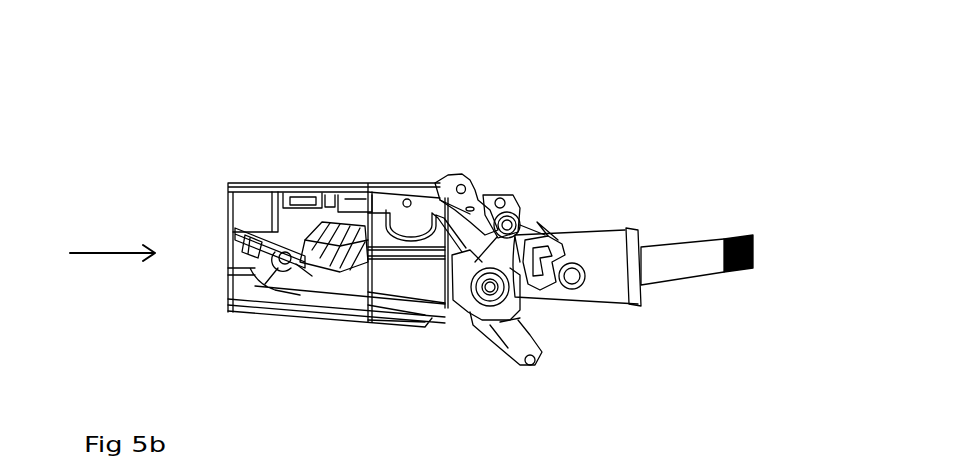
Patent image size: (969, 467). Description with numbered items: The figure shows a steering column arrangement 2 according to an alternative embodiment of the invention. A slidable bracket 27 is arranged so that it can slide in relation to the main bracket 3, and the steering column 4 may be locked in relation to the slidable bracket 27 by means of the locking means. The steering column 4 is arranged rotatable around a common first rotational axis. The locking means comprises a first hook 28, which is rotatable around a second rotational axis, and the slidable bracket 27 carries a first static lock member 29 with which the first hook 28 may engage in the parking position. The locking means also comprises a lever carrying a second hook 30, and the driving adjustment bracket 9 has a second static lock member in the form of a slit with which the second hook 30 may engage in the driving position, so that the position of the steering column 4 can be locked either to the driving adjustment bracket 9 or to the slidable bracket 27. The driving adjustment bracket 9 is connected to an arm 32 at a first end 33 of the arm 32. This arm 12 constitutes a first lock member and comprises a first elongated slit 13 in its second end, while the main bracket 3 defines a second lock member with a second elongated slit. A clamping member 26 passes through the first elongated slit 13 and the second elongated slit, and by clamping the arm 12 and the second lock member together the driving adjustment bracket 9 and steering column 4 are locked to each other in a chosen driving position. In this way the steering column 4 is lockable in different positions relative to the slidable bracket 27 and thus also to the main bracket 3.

The steering column arrangement 2 is at (98, 253).
The main bracket 3 is at (332, 185).
The steering column 4 is at (628, 238).
The driving adjustment bracket 9 is at (520, 295).
The arm 12 is at (323, 242).
The first elongated slit 13 is at (297, 252).
The clamping member 26 is at (287, 258).
The slidable bracket 27 is at (438, 290).
The first hook 28 is at (545, 235).
The first static lock member 29 is at (510, 215).
The second hook 30 is at (512, 317).
The arm 32 is at (480, 192).
The first end 33 is at (500, 198).